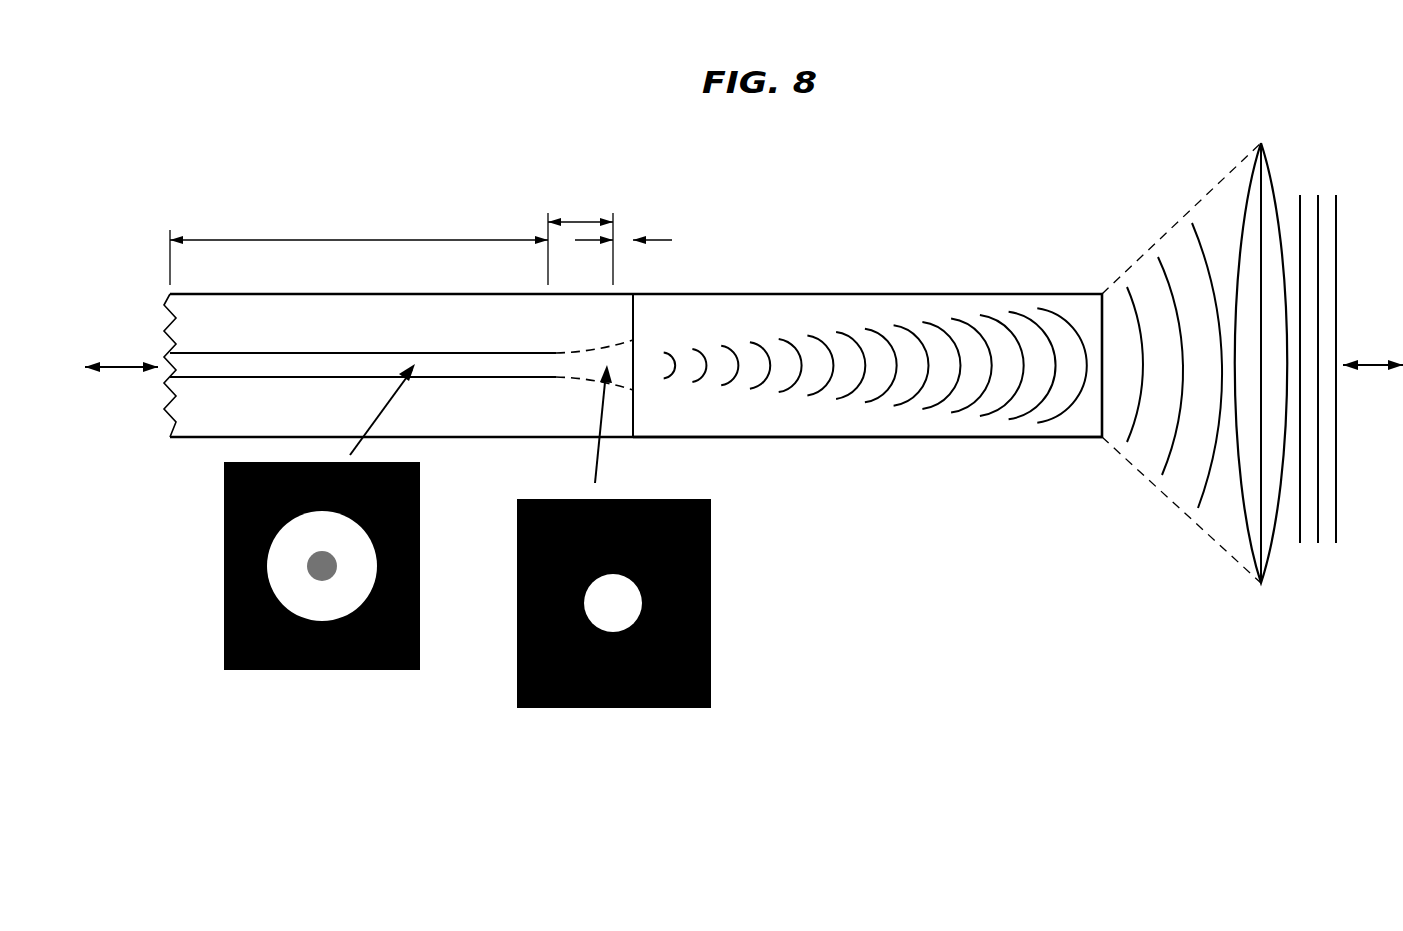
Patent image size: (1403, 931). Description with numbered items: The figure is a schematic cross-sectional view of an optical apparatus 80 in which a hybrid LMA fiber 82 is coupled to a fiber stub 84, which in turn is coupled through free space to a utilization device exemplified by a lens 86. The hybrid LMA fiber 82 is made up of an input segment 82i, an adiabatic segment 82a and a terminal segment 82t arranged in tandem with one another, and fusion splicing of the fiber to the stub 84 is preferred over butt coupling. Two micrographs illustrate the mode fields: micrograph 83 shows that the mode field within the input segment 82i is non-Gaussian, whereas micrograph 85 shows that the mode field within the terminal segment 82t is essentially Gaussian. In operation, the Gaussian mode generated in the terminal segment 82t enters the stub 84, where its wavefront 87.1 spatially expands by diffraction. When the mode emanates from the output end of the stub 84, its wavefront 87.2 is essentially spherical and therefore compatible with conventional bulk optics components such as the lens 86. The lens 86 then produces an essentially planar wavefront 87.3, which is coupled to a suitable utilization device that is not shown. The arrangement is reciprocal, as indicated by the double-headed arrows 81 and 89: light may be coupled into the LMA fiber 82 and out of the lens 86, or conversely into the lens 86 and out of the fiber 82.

The optical apparatus 80 is at (950, 132).
The double-headed arrow 81 is at (117, 365).
The hybrid LMA fiber 82 is at (175, 437).
The input segment 82i is at (358, 240).
The adiabatic segment 82a is at (578, 222).
The terminal segment 82t is at (658, 240).
The micrograph 83 is at (224, 494).
The fiber stub 84 is at (850, 420).
The micrograph 85 is at (711, 532).
The lens 86 is at (1245, 534).
The wavefront 87.1 is at (872, 332).
The wavefront 87.2 is at (1160, 270).
The wavefront 87.3 is at (1318, 205).
The double-headed arrow 89 is at (1380, 360).